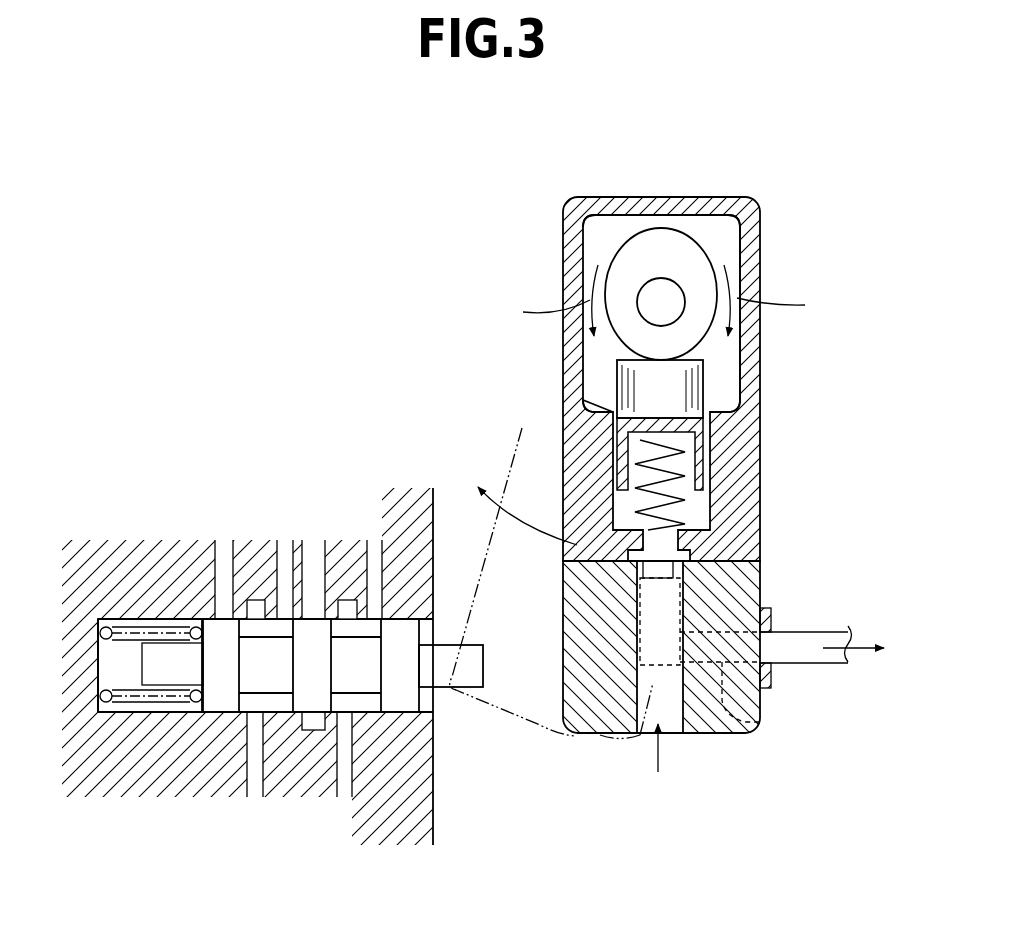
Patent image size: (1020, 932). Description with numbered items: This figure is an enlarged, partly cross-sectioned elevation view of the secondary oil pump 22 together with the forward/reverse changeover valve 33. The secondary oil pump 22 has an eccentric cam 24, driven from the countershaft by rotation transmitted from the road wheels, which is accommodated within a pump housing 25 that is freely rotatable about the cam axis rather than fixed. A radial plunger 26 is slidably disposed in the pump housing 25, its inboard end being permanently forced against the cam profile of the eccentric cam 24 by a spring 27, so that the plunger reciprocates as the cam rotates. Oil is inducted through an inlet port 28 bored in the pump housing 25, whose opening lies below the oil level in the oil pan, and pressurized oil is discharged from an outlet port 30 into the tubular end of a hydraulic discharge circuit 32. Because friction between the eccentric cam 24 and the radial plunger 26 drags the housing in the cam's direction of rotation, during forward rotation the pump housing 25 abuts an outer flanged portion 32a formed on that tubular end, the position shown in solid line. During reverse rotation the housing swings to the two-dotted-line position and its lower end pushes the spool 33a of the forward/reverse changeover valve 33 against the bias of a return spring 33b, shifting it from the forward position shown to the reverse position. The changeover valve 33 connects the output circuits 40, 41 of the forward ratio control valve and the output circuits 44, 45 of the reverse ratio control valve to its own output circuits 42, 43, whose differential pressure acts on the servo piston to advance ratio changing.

The secondary oil pump 22 is at (552, 204).
The eccentric cam 24 is at (610, 250).
The pump housing 25 is at (760, 213).
The radial plunger 26 is at (706, 388).
The spring 27 is at (700, 470).
The inlet port 28 is at (683, 708).
The outlet port 30 is at (760, 722).
The hydraulic discharge circuit 32 is at (830, 628).
The outer flanged portion 32a is at (768, 605).
The forward/reverse changeover valve 33 is at (302, 572).
The spool 33a is at (427, 693).
The return spring 33b is at (137, 613).
The output circuit 40 is at (373, 548).
The output circuit 41 is at (273, 542).
The output circuit 42 is at (345, 783).
The output circuit 43 is at (253, 783).
The output circuit 44 is at (315, 552).
The output circuit 45 is at (222, 540).